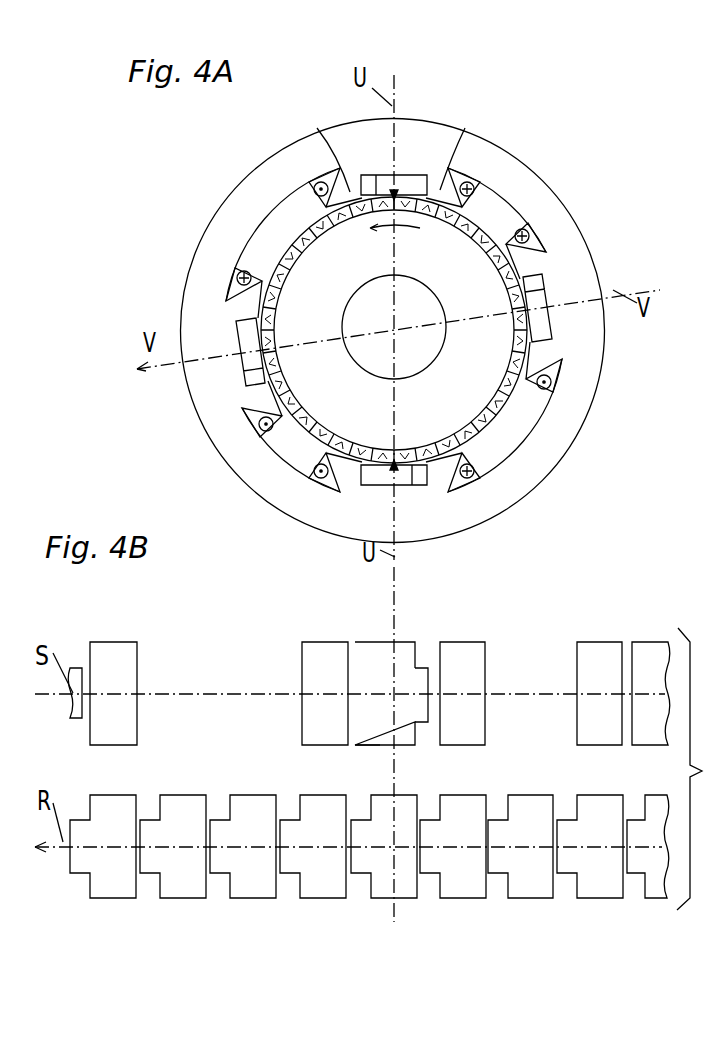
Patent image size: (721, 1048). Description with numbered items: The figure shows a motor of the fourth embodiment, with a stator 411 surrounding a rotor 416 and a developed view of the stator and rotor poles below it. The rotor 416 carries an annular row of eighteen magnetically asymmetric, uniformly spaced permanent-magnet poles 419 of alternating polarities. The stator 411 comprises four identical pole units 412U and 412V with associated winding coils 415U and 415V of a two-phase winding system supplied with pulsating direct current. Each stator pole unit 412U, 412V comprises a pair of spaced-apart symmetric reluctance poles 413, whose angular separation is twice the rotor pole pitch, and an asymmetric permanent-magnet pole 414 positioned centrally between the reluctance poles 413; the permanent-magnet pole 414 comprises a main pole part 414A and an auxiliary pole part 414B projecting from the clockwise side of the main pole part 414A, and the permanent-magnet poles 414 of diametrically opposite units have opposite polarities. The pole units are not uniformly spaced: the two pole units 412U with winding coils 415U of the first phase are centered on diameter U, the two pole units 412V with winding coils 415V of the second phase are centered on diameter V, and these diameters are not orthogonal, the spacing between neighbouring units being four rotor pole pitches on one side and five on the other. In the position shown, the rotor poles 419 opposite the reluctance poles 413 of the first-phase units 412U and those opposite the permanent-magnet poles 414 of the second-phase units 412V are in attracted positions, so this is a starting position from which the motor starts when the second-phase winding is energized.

In FIG. 4A, the stator 411 is at (272, 183).
In FIG. 4A, the reluctance pole 413 is at (320, 130).
In FIG. 4B, the reluctance pole 413 is at (120, 653).
In FIG. 4A, the permanent-magnet pole 414 is at (385, 174).
In FIG. 4B, the permanent-magnet pole 414 is at (368, 660).
In FIG. 4B, the main pole part 414A is at (378, 737).
In FIG. 4B, the auxiliary pole part 414B is at (420, 712).
In FIG. 4A, the first-phase stator pole unit 412U is at (421, 157).
In FIG. 4B, the first-phase stator pole unit 412U is at (419, 624).
In FIG. 4A, the second-phase stator pole unit 412V is at (572, 322).
In FIG. 4B, the second-phase stator pole unit 412V is at (73, 637).
In FIG. 4A, the first-phase winding coil 415U is at (473, 182).
In FIG. 4A, the second-phase winding coil 415V is at (528, 233).
In FIG. 4A, the rotor 416 is at (503, 217).
In FIG. 4A, the rotor permanent-magnet pole 419 is at (528, 257).